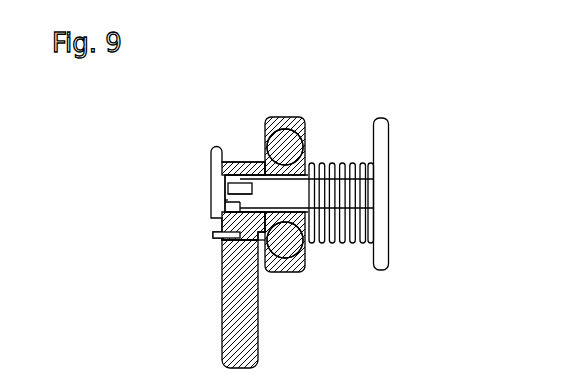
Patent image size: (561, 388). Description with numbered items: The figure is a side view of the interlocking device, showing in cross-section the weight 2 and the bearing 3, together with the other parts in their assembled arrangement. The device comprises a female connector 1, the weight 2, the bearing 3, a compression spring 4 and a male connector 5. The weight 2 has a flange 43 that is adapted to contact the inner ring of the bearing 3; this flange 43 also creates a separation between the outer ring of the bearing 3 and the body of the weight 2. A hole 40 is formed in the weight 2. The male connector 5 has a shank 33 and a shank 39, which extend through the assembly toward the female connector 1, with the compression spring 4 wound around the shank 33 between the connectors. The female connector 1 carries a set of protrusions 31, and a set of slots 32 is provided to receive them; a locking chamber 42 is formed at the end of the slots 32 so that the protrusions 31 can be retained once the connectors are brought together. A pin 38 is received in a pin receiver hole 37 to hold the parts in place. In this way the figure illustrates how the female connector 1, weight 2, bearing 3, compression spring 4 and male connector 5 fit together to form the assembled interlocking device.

The female connector 1 is at (209, 215).
The weight 2 is at (262, 357).
The bearing 3 is at (307, 272).
The compression spring 4 is at (341, 163).
The male connector 5 is at (392, 193).
The set of protrusions 31 is at (250, 208).
The set of slots 32 is at (233, 198).
The shank of the male connector 33 is at (340, 176).
The pin receiver hole 37 is at (226, 248).
The pin 38 is at (214, 235).
The shank of the male connector 39 is at (284, 186).
The hole 40 is at (236, 185).
The locking chamber 42 is at (241, 190).
The flange 43 is at (262, 233).